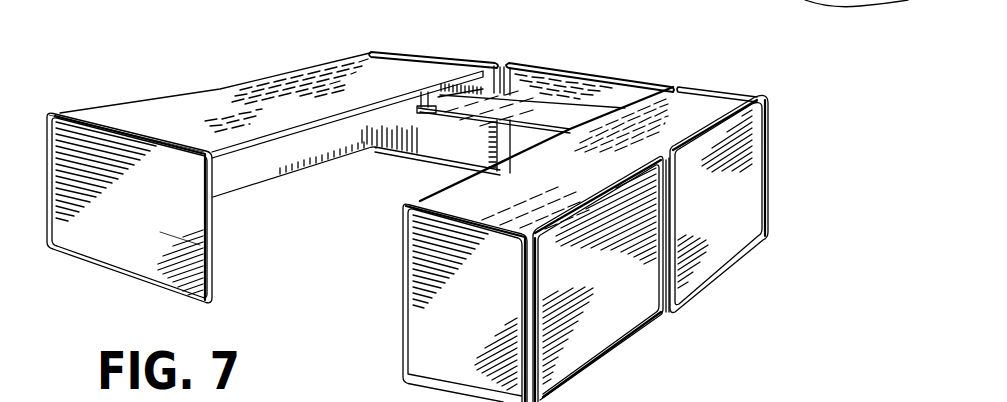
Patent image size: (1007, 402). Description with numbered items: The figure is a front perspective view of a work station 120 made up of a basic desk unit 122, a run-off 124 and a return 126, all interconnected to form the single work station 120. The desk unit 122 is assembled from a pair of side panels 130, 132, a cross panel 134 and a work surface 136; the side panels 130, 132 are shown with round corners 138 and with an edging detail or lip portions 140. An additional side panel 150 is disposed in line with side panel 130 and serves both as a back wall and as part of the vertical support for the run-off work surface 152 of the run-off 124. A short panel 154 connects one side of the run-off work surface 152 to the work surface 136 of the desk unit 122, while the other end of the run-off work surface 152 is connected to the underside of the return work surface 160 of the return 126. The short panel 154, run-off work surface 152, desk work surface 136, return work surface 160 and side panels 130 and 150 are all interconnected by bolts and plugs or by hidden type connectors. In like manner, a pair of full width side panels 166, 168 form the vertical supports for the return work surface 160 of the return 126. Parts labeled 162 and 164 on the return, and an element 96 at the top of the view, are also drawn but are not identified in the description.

The partition panel 96 is at (848, 6).
The work station 120 is at (578, 55).
The desk unit 122 is at (232, 68).
The run-off 124 is at (694, 67).
The return 126 is at (785, 137).
The side panel 130 is at (423, 157).
The side panel 132 is at (186, 281).
The cross panel 134 is at (253, 170).
The work surface 136 is at (302, 111).
The round corners 138 is at (417, 22).
The edging detail or lip portions 140 is at (115, 135).
The additional side panel 150 is at (597, 90).
The run-off work surface 152 is at (493, 108).
The short panel 154 is at (440, 103).
The return work surface 160 is at (612, 161).
The end panel 162 is at (733, 88).
The left front panel 164 is at (493, 337).
The full width side panel 166 is at (615, 286).
The full width side panel 168 is at (734, 200).